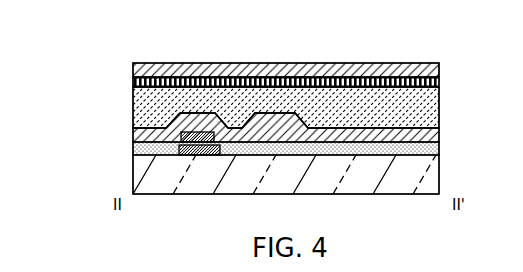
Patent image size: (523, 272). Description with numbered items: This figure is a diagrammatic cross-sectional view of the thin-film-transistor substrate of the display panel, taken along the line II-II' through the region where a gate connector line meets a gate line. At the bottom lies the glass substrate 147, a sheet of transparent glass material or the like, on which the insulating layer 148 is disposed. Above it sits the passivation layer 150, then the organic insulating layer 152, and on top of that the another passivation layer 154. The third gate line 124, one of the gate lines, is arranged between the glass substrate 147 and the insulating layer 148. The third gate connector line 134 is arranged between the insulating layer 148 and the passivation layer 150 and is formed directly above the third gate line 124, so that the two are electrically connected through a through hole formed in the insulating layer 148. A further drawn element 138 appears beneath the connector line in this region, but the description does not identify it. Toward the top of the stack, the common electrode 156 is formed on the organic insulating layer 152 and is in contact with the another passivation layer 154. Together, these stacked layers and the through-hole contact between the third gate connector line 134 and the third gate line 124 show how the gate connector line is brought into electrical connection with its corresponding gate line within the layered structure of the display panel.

The third gate line 124 is at (180, 137).
The third gate connector line 134 is at (172, 130).
The active layer 138 is at (179, 149).
The glass substrate 147 is at (438, 178).
The insulating layer 148 is at (438, 151).
The passivation layer 150 is at (438, 132).
The organic insulating layer 152 is at (230, 108).
The another passivation layer 154 is at (358, 76).
The common electrode 156 is at (131, 79).